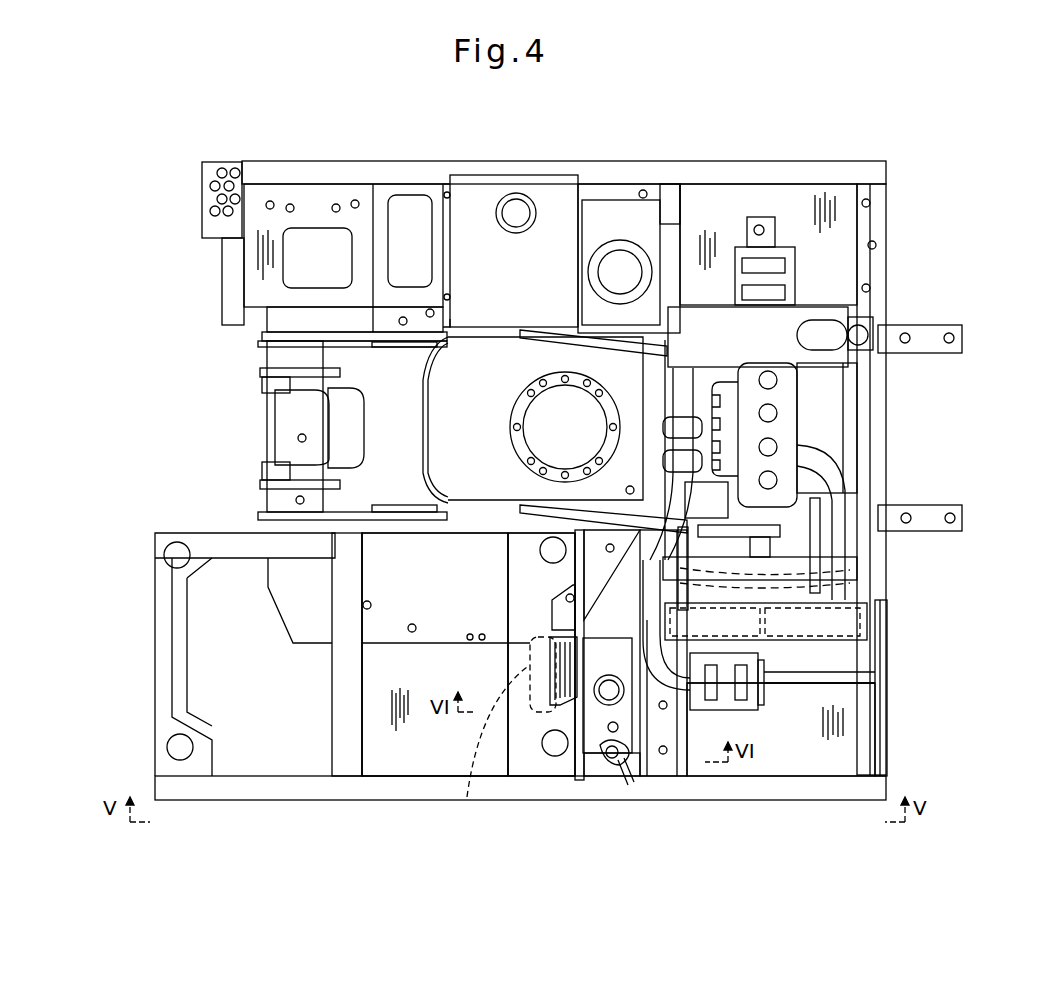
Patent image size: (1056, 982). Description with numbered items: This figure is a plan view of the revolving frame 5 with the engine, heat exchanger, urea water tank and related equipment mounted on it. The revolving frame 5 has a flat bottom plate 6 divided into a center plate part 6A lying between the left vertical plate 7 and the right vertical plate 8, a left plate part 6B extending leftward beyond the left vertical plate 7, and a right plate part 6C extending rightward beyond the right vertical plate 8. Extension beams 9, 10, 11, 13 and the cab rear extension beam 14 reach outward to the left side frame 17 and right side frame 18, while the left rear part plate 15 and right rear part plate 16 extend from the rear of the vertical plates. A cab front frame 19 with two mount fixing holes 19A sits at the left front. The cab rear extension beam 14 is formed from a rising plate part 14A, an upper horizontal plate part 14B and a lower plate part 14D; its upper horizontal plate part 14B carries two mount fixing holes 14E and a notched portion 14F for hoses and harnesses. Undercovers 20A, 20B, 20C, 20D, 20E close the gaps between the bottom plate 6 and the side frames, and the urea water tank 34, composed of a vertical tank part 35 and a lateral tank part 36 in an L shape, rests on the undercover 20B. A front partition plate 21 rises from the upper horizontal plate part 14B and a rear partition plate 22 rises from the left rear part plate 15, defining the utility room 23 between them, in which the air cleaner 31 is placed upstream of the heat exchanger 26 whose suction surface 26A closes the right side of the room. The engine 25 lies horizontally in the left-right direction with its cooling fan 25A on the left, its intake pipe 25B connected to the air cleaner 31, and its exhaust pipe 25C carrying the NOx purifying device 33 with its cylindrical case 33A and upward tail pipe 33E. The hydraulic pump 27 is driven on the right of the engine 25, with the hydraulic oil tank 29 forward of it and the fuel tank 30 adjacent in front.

The revolving frame 5 is at (205, 200).
The bottom plate 6 is at (448, 412).
The center plate part 6A is at (448, 445).
The left plate part 6B is at (385, 630).
The right plate part 6C is at (373, 317).
The left vertical plate 7 is at (260, 514).
The right vertical plate 8 is at (262, 334).
The extension beam 9 is at (347, 762).
The extension beam 10 is at (694, 762).
The extension beam 11 is at (443, 228).
The extension beam 13 is at (652, 193).
The cab rear extension beam 14 is at (560, 778).
The rising plate part 14A is at (540, 637).
The upper horizontal plate part 14B is at (525, 663).
The lower plate part 14D is at (500, 752).
The mount fixing holes 14E is at (540, 549).
The notched portion 14F is at (552, 603).
The left rear part plate 15 is at (880, 597).
The right rear part plate 16 is at (886, 198).
The left side frame 17 is at (287, 790).
The right side frame 18 is at (583, 257).
The cab front frame 19 is at (160, 652).
The mount fixing holes 19A is at (163, 553).
The undercover 20A is at (427, 762).
The undercover 20B is at (650, 762).
The undercover 20C is at (850, 752).
The undercover 20D is at (307, 215).
The undercover 20E is at (810, 225).
The front partition plate 21 is at (578, 572).
The rear partition plate 22 is at (878, 733).
The utility room 23 is at (800, 765).
The engine 25 is at (765, 430).
The cooling fan 25A is at (880, 577).
The intake pipe 25B is at (700, 497).
The exhaust pipe 25C is at (692, 380).
The heat exchanger 26 is at (820, 627).
The suction surface 26A is at (785, 650).
The hydraulic pump 27 is at (762, 275).
The hydraulic oil tank 29 is at (620, 250).
The fuel tank 30 is at (518, 267).
The air cleaner 31 is at (768, 720).
The NOx purifying device 33 is at (826, 307).
The cylindrical case 33A is at (775, 345).
The tail pipe 33E is at (825, 335).
The urea water tank 34 is at (607, 762).
The vertical tank part 35 is at (620, 753).
The lateral tank part 36 is at (467, 797).